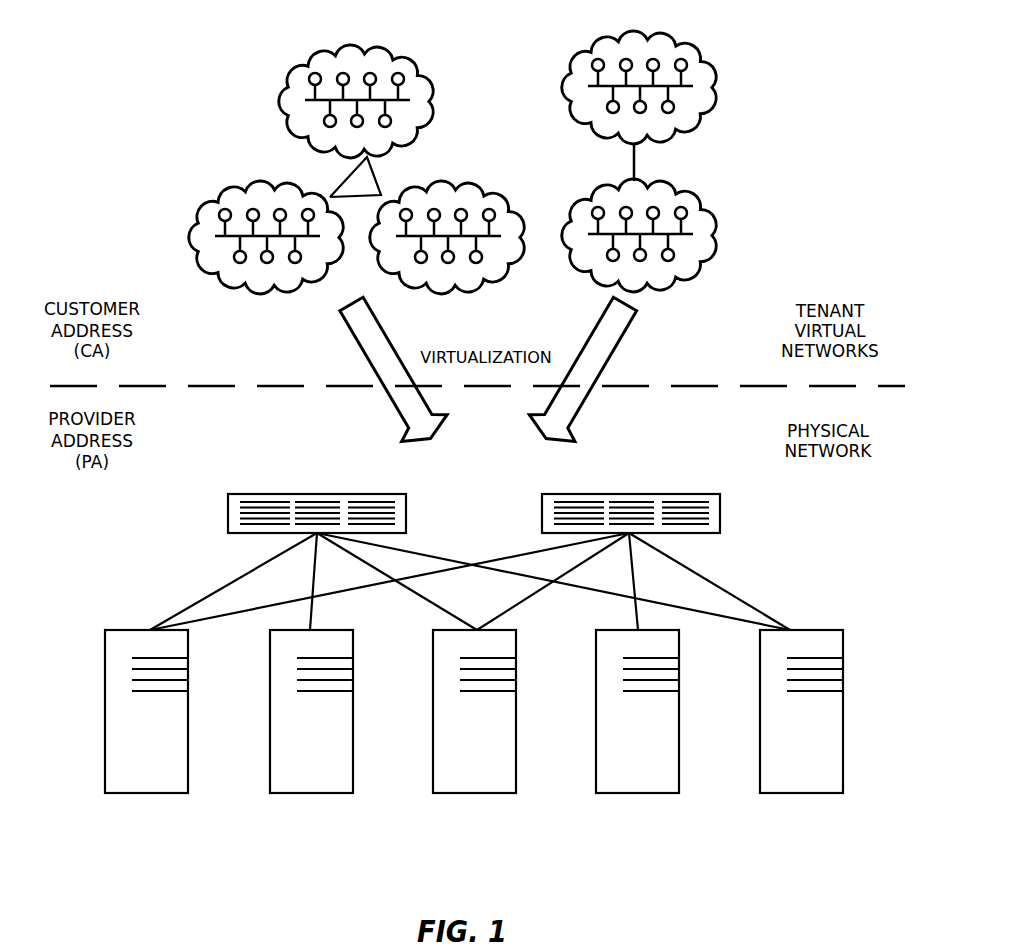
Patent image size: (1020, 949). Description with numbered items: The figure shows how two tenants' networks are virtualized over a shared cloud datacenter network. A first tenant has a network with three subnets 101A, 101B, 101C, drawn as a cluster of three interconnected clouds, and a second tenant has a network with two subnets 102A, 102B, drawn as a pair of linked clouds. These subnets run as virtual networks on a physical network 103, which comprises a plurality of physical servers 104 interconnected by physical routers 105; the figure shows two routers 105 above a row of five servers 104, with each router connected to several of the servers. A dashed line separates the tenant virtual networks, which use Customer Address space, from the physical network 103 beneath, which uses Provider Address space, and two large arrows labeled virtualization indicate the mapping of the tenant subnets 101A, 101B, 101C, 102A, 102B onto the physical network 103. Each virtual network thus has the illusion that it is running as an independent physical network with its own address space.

The subnet 101A is at (200, 195).
The subnet 101B is at (290, 60).
The subnet 101C is at (458, 182).
The subnet 102A is at (720, 82).
The subnet 102B is at (720, 228).
The physical network 103 is at (124, 553).
The physical server 104 is at (150, 794).
The physical router 105 is at (277, 493).